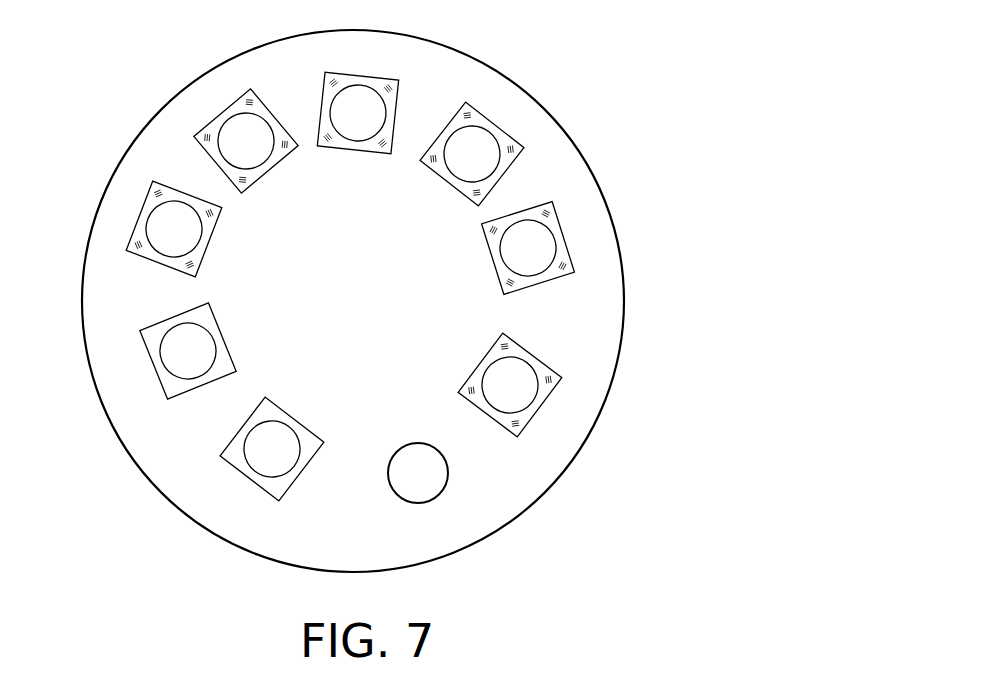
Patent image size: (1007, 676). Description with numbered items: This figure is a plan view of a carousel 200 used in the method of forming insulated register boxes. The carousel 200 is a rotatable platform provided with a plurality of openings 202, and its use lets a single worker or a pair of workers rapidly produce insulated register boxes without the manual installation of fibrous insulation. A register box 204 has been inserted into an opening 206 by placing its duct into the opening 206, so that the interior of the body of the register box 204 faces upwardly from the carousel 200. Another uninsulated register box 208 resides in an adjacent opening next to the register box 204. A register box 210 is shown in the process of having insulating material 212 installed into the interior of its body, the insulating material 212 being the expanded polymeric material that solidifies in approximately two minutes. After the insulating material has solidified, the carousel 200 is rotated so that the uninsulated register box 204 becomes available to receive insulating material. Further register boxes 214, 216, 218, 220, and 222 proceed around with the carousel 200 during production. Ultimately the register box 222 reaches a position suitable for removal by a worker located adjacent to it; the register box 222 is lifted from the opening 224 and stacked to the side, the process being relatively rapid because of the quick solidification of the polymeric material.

The carousel 200 is at (593, 342).
The openings 202 is at (414, 461).
The register box 204 is at (290, 426).
The opening 206 is at (288, 446).
The uninsulated register box 208 is at (222, 331).
The register box 210 is at (212, 233).
The insulating material 212 is at (160, 229).
The register box 214 is at (272, 168).
The register box 216 is at (361, 153).
The register box 218 is at (457, 189).
The register box 220 is at (494, 262).
The register box 222 is at (508, 422).
The opening 224 is at (509, 406).